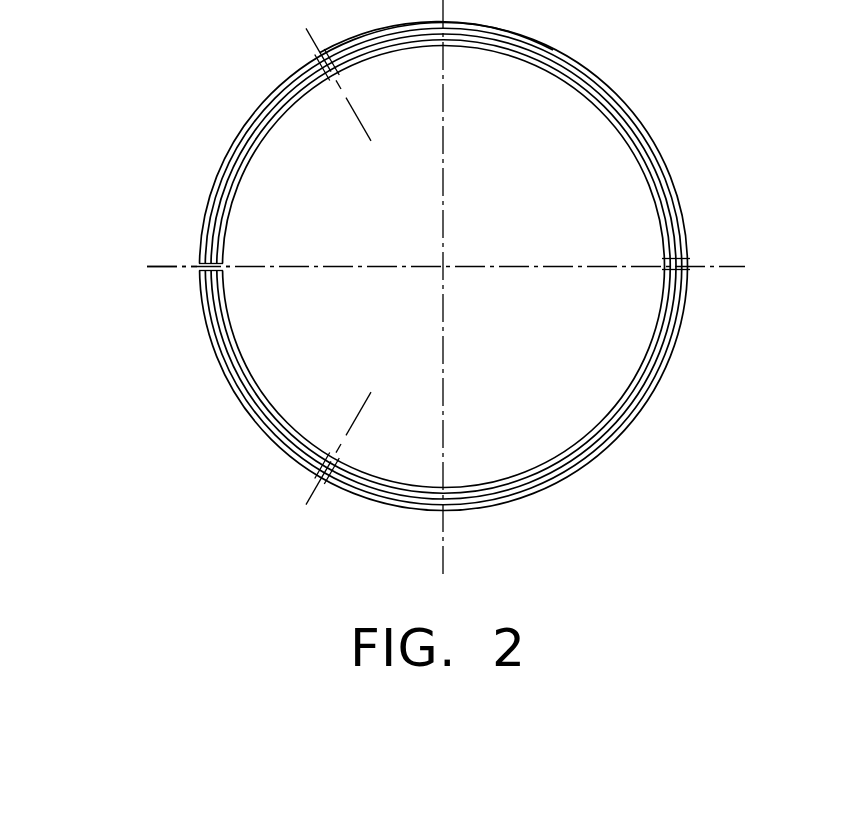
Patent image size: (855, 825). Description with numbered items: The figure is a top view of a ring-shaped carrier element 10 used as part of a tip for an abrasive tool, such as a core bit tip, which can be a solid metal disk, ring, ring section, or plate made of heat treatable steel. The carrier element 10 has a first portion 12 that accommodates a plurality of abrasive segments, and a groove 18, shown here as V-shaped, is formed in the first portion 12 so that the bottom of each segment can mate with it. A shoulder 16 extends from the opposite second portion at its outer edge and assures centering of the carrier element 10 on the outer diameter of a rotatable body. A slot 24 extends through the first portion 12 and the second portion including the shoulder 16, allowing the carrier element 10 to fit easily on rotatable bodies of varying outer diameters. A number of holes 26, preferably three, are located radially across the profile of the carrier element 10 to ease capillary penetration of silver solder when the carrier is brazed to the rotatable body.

The carrier element 10 is at (52, 86).
The first portion 12 is at (650, 130).
The shoulder 16 is at (248, 121).
The groove 18 is at (553, 65).
The slot 24 is at (195, 267).
The holes 26 is at (322, 56).